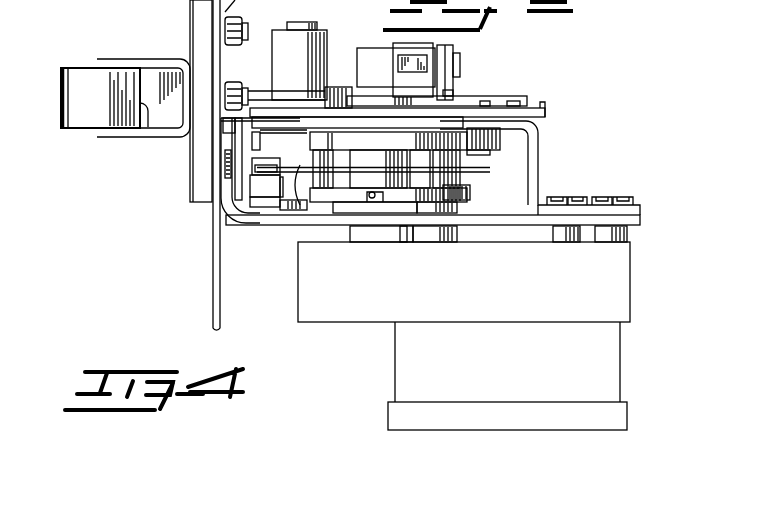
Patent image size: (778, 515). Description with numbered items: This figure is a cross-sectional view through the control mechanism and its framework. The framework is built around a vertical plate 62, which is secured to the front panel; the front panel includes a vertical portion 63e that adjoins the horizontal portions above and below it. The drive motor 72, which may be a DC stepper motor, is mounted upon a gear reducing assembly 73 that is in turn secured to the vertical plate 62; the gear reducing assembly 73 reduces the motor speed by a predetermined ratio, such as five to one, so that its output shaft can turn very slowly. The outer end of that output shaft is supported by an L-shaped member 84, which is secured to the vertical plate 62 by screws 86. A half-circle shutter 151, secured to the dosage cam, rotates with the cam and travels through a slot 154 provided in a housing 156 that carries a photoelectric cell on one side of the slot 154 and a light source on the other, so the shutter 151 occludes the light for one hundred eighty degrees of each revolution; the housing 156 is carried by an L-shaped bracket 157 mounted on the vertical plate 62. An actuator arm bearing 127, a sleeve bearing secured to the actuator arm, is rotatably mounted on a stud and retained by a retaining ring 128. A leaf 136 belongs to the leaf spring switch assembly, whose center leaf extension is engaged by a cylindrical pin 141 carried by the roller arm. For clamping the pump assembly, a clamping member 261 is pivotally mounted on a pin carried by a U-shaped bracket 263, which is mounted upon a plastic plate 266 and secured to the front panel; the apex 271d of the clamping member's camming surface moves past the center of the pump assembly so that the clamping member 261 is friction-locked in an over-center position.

The clamping member 261 is at (52, 80).
The apex of the camming surface 271d is at (147, 108).
The U-shaped bracket 263 is at (165, 132).
The plate 266 is at (197, 183).
The housing 156 is at (253, 183).
The L-shaped bracket 157 is at (247, 215).
The vertical portion 63e is at (212, 297).
The 180° shutter 151 is at (302, 190).
The slot 154 is at (261, 170).
The retaining ring 128 is at (277, 27).
The actuator arm bearing 127 is at (290, 52).
The leaf 136 is at (393, 62).
The cylindrical pin 141 is at (453, 53).
The L-shaped member 84 is at (535, 153).
The screws 86 is at (618, 203).
The vertical plate 62 is at (502, 222).
The gear reducing assembly 73 is at (617, 275).
The drive motor 72 is at (590, 372).